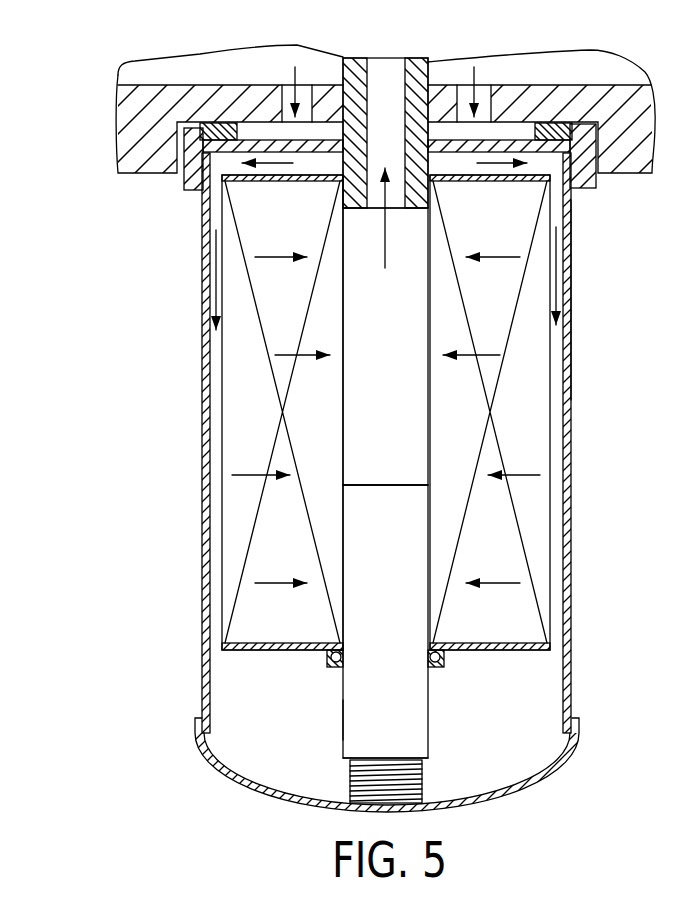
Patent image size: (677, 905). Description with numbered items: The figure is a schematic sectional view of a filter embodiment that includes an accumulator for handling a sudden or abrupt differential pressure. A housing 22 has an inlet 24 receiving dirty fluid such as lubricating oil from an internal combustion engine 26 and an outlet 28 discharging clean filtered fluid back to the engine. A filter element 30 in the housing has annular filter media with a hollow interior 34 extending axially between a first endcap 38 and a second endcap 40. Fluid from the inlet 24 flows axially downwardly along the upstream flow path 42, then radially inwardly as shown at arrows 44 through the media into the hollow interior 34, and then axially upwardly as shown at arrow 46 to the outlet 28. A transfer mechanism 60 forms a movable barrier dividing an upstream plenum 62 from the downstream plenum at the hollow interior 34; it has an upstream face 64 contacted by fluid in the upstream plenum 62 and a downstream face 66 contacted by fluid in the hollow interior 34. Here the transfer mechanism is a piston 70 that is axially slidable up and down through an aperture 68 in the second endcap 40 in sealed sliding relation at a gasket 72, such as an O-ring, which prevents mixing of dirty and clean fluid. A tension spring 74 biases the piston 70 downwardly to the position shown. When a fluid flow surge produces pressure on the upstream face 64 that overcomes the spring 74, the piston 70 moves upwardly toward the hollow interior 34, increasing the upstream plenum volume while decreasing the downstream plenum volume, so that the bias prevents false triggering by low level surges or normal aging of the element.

The housing 22 is at (202, 283).
The inlet 24 is at (482, 93).
The internal combustion engine 26 is at (600, 67).
The outlet 28 is at (385, 80).
The filter element 30 is at (220, 405).
The hollow interior 34 is at (357, 390).
The first endcap 38 is at (300, 181).
The second endcap 40 is at (506, 645).
The upstream flow path 42 is at (568, 297).
The radially inward flow 44 is at (495, 260).
The downstream flow path 46 is at (385, 218).
The transfer mechanism 60 is at (430, 718).
The upstream plenum 62 is at (556, 712).
The upstream face 64 is at (430, 760).
The downstream face 66 is at (385, 485).
The aperture 68 is at (438, 652).
The piston 70 is at (368, 686).
The gasket 72 is at (442, 662).
The tension spring 74 is at (350, 778).